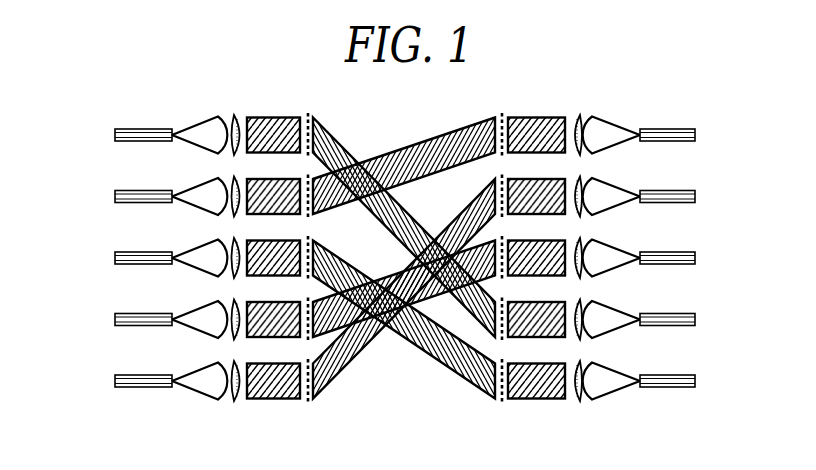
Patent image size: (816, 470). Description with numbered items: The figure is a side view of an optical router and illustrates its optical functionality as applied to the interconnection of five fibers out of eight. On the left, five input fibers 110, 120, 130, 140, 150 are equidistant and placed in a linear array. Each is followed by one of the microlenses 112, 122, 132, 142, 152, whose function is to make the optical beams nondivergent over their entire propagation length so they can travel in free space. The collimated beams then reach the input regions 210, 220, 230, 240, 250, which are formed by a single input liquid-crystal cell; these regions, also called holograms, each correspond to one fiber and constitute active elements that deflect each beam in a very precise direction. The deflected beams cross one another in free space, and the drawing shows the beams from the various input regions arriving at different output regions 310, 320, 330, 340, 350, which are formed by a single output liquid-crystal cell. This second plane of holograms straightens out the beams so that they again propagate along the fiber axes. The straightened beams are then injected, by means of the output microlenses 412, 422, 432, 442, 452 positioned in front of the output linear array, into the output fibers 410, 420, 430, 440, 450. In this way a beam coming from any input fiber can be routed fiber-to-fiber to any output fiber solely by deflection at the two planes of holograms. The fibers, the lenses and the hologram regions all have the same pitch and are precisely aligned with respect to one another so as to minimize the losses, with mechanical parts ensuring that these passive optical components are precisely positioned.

The input fiber 110 is at (116, 130).
The input fiber 120 is at (116, 192).
The input fiber 130 is at (116, 253).
The input fiber 140 is at (116, 314).
The input fiber 150 is at (116, 376).
The microlens 112 is at (229, 116).
The microlens 122 is at (229, 178).
The microlens 132 is at (229, 239).
The microlens 142 is at (229, 300).
The microlens 152 is at (229, 362).
The input region 210 is at (308, 112).
The input region 220 is at (310, 214).
The input region 230 is at (316, 241).
The input region 240 is at (307, 299).
The input region 250 is at (308, 404).
The output region 310 is at (502, 112).
The output region 320 is at (496, 175).
The output region 330 is at (503, 277).
The output region 340 is at (503, 338).
The output region 350 is at (503, 404).
The output microlens 412 is at (575, 117).
The output microlens 422 is at (575, 178).
The output microlens 432 is at (575, 240).
The output microlens 442 is at (575, 302).
The output microlens 452 is at (575, 363).
The output fiber 410 is at (697, 129).
The output fiber 420 is at (697, 190).
The output fiber 430 is at (697, 252).
The output fiber 440 is at (697, 314).
The output fiber 450 is at (697, 375).